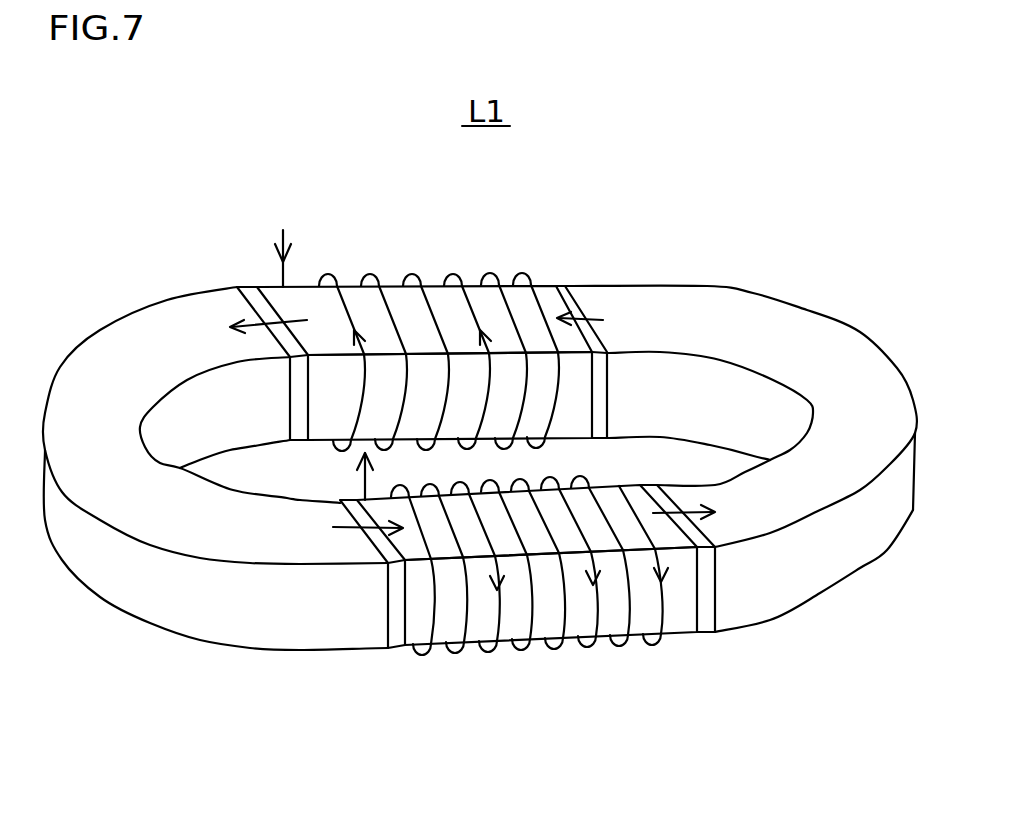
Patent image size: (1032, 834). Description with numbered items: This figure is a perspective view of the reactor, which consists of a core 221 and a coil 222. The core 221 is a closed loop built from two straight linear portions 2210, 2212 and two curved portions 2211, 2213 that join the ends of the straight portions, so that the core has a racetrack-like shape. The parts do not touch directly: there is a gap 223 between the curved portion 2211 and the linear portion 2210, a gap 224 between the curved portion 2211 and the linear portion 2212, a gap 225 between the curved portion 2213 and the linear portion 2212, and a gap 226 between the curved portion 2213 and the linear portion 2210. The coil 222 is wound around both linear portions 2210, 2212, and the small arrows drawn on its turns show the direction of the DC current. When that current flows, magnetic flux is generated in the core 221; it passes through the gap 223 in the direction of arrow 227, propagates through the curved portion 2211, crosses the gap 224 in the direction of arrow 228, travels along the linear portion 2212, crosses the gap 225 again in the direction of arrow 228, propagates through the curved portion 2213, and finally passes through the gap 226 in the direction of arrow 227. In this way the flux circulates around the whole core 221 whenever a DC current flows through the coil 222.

The core 221 is at (177, 262).
The curved portion 2211 is at (123, 343).
The curved portion 2213 is at (758, 312).
The coil 222 is at (530, 285).
The linear portion 2210 is at (403, 300).
The linear portion 2212 is at (542, 623).
The gap 223 is at (290, 438).
The gap 224 is at (395, 638).
The gap 225 is at (705, 608).
The gap 226 is at (597, 420).
The arrow 227 is at (598, 320).
The arrow 228 is at (700, 504).